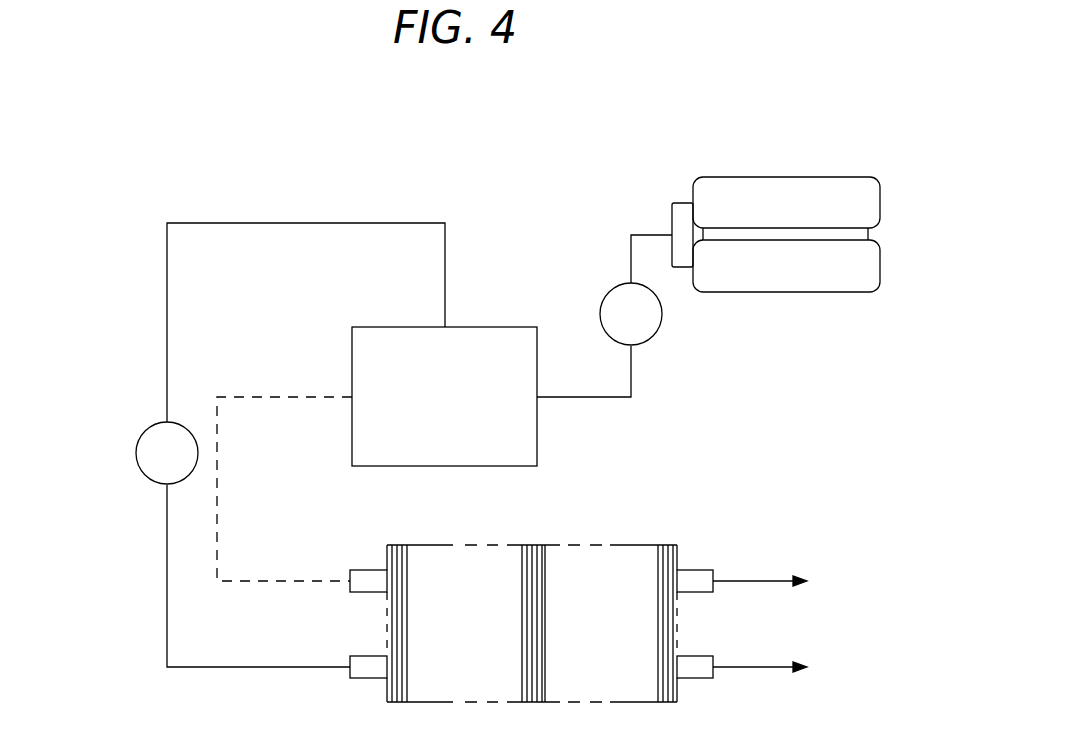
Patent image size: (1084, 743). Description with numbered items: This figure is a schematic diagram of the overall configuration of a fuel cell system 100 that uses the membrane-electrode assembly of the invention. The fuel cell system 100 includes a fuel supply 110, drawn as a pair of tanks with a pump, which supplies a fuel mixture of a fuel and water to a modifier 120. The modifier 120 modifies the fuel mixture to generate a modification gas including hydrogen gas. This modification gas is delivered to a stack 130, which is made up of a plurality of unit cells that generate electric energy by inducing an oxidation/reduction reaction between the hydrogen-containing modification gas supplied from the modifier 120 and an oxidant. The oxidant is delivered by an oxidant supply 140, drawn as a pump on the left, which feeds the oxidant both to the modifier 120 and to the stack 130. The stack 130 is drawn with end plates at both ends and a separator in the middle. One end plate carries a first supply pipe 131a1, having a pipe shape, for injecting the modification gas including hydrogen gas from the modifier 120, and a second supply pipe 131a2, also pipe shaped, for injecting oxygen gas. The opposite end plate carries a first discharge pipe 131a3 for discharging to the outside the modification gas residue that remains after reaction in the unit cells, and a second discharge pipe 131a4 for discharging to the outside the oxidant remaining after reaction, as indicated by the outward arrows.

The fuel cell system 100 is at (293, 100).
The fuel supply 110 is at (661, 176).
The modifier 120 is at (393, 310).
The stack 130 is at (568, 525).
The first supply pipe 131a1 is at (368, 570).
The second supply pipe 131a2 is at (368, 678).
The first discharge pipe 131a3 is at (696, 678).
The second discharge pipe 131a4 is at (696, 570).
The oxidant supply 140 is at (131, 411).